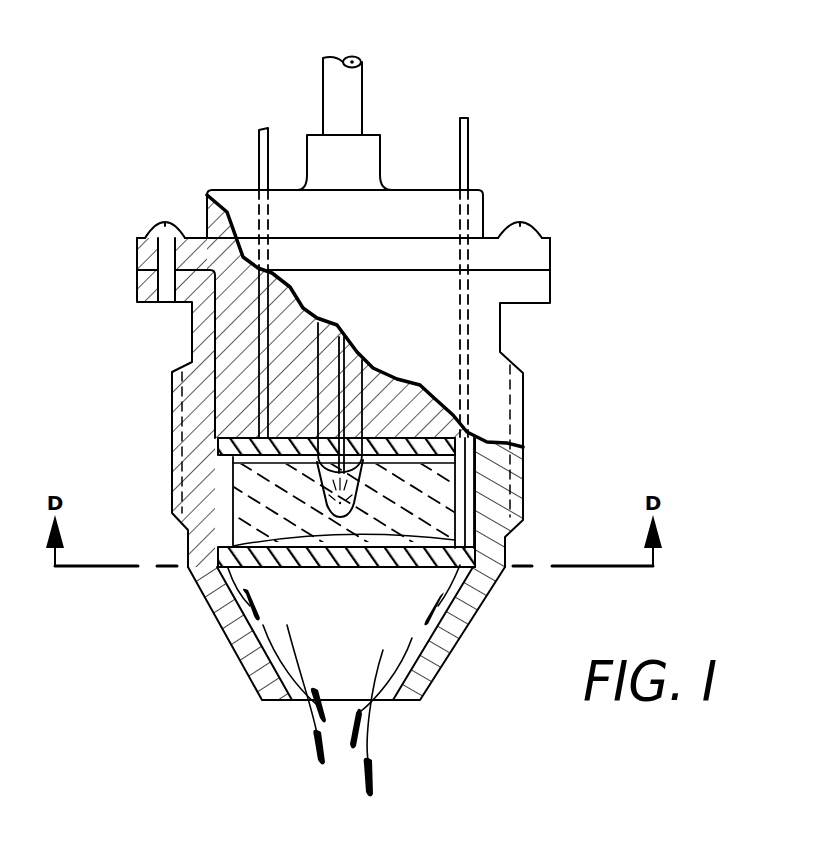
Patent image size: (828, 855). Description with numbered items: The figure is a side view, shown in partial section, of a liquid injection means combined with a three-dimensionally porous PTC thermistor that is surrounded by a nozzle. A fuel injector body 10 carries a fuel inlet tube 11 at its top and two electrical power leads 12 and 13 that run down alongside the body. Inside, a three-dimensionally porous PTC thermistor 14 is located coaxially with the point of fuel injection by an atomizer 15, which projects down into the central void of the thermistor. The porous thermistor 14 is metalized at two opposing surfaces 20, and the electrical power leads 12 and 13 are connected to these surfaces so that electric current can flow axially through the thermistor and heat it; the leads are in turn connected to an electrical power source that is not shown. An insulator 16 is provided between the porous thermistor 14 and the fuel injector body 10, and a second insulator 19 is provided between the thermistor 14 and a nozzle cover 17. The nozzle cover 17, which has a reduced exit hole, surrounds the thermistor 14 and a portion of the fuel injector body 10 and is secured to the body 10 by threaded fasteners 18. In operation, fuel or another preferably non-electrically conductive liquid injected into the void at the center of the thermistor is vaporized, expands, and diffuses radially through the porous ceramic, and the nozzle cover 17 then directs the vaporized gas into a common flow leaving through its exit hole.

The fuel injector body 10 is at (218, 193).
The fuel inlet tube 11 is at (352, 57).
The electrical power lead 12 is at (470, 135).
The electrical power lead 13 is at (258, 145).
The 3-dimensionally porous PTC thermistor 14 is at (267, 477).
The atomizer 15 is at (347, 380).
The insulator 16 is at (250, 447).
The nozzle cover 17 is at (460, 640).
The threaded fasteners 18 is at (530, 222).
The insulator 19 is at (305, 569).
The metalized opposing surfaces 20 is at (400, 438).